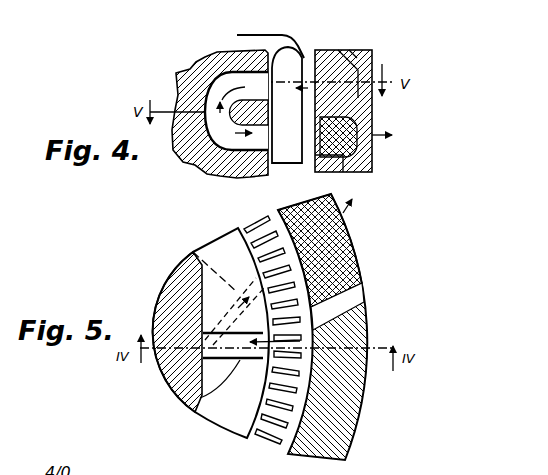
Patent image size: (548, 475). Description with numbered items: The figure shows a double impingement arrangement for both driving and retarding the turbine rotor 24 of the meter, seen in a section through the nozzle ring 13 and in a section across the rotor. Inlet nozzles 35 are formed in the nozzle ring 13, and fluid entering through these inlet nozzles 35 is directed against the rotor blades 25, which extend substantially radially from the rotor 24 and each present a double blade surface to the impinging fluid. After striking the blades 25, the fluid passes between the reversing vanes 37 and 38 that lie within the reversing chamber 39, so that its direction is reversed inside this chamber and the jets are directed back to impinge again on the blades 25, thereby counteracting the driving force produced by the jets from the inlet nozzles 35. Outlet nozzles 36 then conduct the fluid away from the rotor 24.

In FIG. 4, the nozzle ring 13 is at (375, 158).
In FIG. 5, the nozzle ring 13 is at (367, 332).
In FIG. 4, the turbine rotor 24 is at (262, 35).
In FIG. 4, the blades 25 is at (293, 166).
In FIG. 5, the blades 25 is at (242, 365).
In FIG. 4, the inlet nozzles 35 is at (353, 50).
In FIG. 5, the inlet nozzles 35 is at (356, 282).
In FIG. 4, the outlet nozzles 36 is at (376, 122).
In FIG. 5, the outlet nozzles 36 is at (347, 228).
In FIG. 4, the reversing vane 37 is at (217, 73).
In FIG. 5, the reversing vane 37 is at (203, 415).
In FIG. 4, the reversing vane 38 is at (190, 159).
In FIG. 5, the reversing vane 38 is at (193, 253).
In FIG. 4, the reversing chamber 39 is at (205, 170).